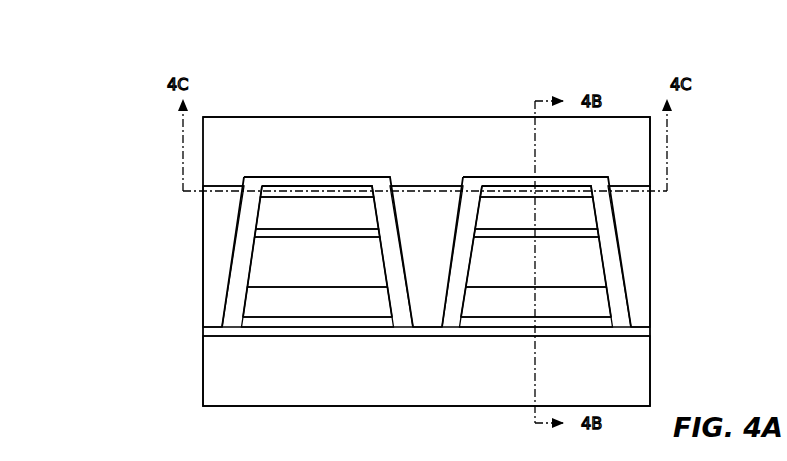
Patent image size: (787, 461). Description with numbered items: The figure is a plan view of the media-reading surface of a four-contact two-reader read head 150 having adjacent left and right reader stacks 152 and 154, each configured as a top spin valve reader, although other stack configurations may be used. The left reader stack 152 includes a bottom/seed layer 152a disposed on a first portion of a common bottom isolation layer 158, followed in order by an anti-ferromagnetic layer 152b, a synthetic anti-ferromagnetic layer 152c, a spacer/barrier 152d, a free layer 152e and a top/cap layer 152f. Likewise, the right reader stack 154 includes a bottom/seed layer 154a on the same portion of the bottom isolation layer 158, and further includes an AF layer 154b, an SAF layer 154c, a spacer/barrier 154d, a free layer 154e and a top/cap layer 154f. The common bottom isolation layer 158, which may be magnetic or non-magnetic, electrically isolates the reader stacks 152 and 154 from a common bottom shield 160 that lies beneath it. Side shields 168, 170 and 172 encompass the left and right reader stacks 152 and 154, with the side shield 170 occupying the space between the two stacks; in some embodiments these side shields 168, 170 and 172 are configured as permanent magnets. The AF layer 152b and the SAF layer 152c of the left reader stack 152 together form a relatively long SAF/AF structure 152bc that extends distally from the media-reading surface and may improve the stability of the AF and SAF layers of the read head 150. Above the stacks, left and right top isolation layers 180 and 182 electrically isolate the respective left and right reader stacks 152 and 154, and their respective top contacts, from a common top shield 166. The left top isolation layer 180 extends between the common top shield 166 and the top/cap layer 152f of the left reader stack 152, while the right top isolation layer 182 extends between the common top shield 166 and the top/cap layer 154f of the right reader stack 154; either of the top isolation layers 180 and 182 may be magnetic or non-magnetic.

The read head 150 is at (353, 87).
The left reader stack 152 is at (243, 217).
The bottom/seed layer 152a is at (256, 339).
The anti-ferromagnetic layer 152b is at (340, 311).
The SAF/AF structure 152bc is at (262, 277).
The synthetic anti-ferromagnetic layer 152c is at (340, 273).
The spacer/barrier 152d is at (272, 235).
The free layer 152e is at (340, 225).
The top/cap layer 152f is at (282, 189).
The right reader stack 154 is at (594, 218).
The bottom/seed layer 154a is at (598, 342).
The AF layer 154b is at (522, 311).
The SAF layer 154c is at (525, 273).
The spacer/barrier 154d is at (587, 235).
The free layer 154e is at (529, 225).
The top/cap layer 154f is at (583, 190).
The common bottom isolation layer 158 is at (638, 333).
The common bottom shield 160 is at (450, 376).
The common top shield 166 is at (450, 160).
The side shield 168 is at (236, 214).
The side shield 170 is at (442, 218).
The side shield 172 is at (647, 209).
The left top isolation layer 180 is at (295, 182).
The right top isolation layer 182 is at (498, 183).